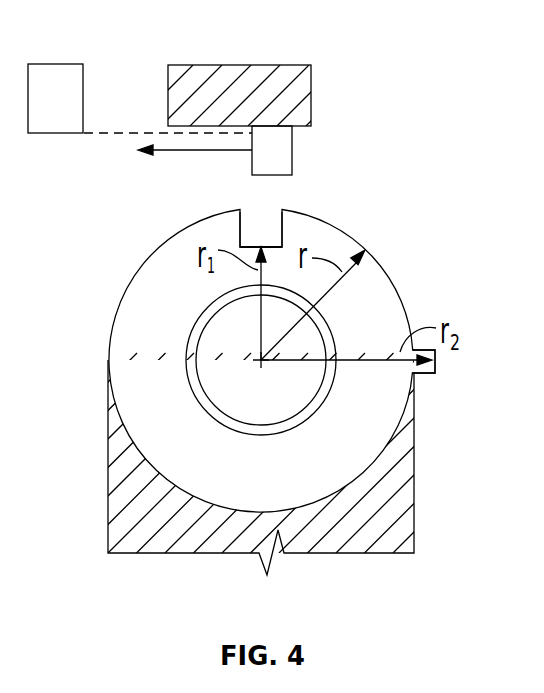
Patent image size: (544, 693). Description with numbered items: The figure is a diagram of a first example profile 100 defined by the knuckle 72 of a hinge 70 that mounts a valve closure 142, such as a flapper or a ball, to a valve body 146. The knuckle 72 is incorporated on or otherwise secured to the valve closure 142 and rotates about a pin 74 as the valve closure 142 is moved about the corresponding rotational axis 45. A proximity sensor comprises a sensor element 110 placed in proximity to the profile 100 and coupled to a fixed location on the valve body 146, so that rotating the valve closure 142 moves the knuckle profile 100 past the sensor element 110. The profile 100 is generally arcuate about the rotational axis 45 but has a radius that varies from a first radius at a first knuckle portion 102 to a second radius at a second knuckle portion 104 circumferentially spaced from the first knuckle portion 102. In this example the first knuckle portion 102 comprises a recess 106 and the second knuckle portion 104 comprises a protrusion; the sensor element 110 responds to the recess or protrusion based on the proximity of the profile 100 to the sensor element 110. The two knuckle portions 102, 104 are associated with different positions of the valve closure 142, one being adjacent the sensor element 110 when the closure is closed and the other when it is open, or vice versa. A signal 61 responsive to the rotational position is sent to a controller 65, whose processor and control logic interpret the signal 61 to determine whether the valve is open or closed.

The controller 65 is at (55, 64).
The signal 61 is at (163, 147).
The valve body 146 is at (276, 84).
The sensor element 110 is at (282, 152).
The hinge 70 is at (301, 359).
The profile 100 is at (282, 359).
The knuckle 72 is at (378, 297).
The recess 106 is at (250, 246).
The first knuckle portion 102 is at (260, 244).
The second knuckle portion 104 is at (432, 375).
The pin 74 is at (307, 383).
The rotational axis 45 is at (252, 362).
The valve closure 142 is at (165, 532).